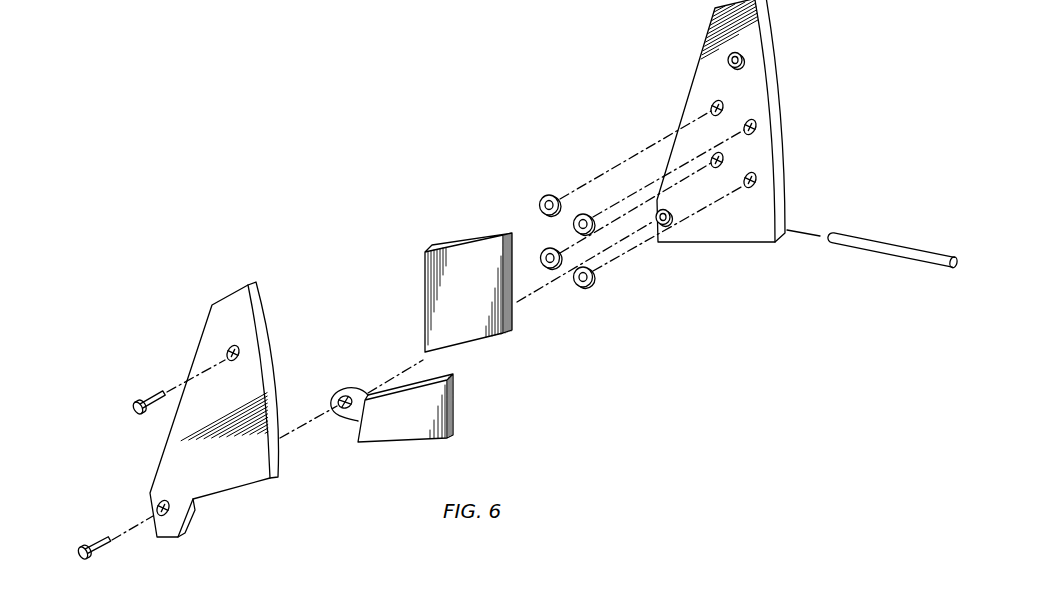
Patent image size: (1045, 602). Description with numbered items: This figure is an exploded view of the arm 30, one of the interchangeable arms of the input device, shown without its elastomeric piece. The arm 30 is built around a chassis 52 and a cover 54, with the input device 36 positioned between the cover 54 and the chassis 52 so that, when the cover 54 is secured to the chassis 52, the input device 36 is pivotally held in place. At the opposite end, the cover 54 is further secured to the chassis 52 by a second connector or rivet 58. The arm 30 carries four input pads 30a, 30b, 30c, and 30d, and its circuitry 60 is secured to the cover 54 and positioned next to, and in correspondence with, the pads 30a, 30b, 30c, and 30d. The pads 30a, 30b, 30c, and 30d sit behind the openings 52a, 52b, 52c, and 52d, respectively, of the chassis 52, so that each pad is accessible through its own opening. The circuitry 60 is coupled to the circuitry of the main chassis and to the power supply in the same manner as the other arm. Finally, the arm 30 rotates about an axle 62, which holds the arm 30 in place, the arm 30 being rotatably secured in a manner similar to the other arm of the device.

The arm 30 is at (370, 116).
The input pad 30a is at (544, 250).
The input pad 30b is at (585, 288).
The input pad 30c is at (544, 199).
The input pad 30d is at (585, 215).
The input control 36 is at (398, 434).
The chassis 52 is at (787, 90).
The opening 52a is at (726, 158).
The opening 52b is at (750, 187).
The opening 52c is at (711, 106).
The opening 52d is at (757, 124).
The cover 54 is at (205, 313).
The second connector or rivet 58 is at (157, 395).
The circuitry 60 is at (445, 317).
The axle 62 is at (898, 250).